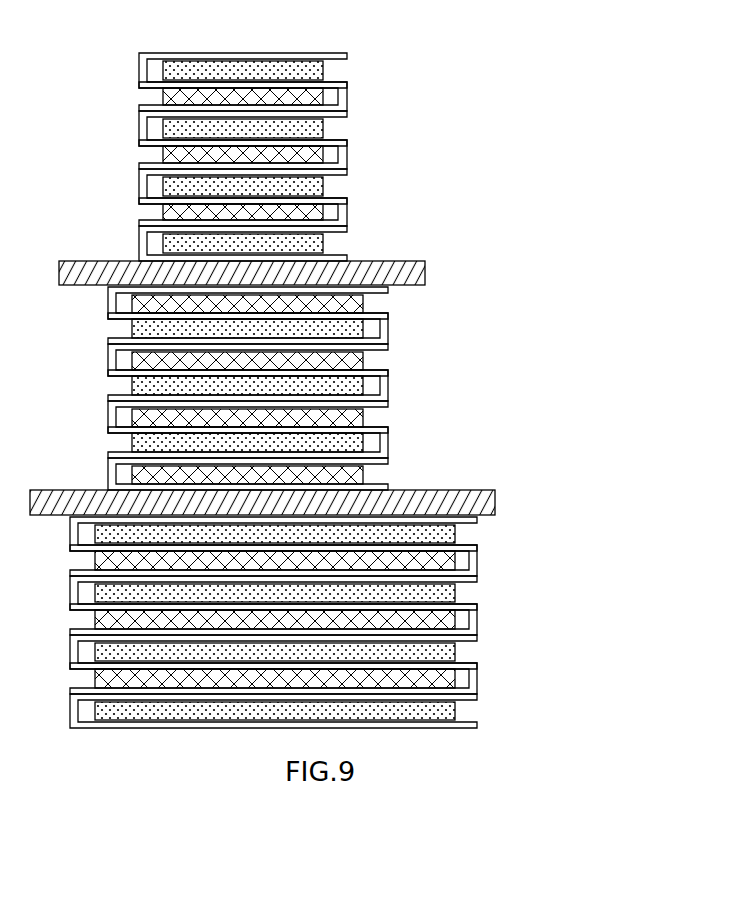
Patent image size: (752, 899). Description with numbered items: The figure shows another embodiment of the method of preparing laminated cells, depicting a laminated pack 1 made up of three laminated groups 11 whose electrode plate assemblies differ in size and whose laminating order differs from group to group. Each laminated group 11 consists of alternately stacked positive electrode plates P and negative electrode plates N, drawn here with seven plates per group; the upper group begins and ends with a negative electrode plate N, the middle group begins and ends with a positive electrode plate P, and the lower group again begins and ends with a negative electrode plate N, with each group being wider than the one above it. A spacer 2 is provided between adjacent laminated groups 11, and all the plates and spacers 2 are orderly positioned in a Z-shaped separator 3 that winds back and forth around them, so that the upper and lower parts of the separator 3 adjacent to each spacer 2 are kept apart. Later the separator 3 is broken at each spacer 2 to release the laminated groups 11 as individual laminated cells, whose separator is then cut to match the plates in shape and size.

The laminated pack 1 is at (542, 123).
The spacer 2 is at (31, 510).
The separator 3 is at (328, 57).
The laminated group 11 is at (448, 37).
The negative electrode plate N is at (322, 70).
The positive electrode plate P is at (322, 97).